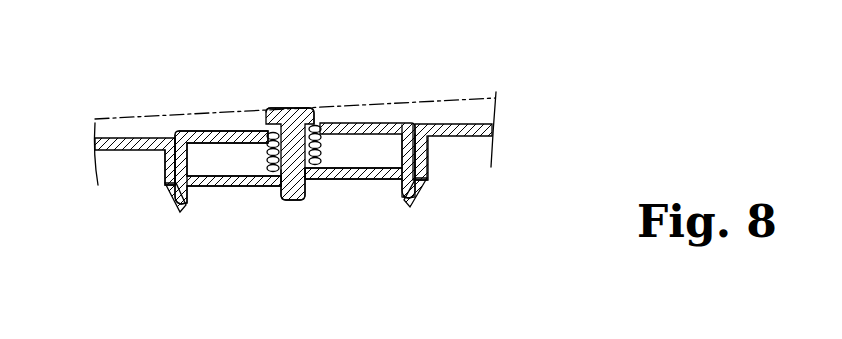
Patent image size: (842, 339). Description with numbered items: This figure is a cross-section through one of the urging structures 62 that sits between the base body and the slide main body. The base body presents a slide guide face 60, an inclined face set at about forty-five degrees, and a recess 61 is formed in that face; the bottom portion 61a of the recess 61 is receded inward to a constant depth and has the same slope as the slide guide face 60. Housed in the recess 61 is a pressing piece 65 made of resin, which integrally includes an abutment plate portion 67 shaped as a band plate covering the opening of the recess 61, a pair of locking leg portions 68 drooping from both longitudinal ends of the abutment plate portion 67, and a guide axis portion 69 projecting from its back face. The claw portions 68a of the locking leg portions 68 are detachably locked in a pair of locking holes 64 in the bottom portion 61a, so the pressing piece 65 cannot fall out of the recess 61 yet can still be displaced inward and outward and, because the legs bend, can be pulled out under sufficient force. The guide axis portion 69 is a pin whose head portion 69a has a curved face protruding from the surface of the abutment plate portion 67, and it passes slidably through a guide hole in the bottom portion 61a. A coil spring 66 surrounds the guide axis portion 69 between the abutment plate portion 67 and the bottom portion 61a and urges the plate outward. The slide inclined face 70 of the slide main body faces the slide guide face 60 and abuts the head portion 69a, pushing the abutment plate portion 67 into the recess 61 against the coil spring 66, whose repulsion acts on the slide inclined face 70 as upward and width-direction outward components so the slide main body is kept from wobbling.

The slide guide face 60 is at (120, 140).
The recess 61 is at (292, 170).
The bottom portion 61a is at (243, 187).
The urging structure 62 is at (287, 106).
The locking hole 64 is at (187, 188).
The pressing piece 65 is at (222, 124).
The coil spring 66 is at (338, 181).
The abutment plate portion 67 is at (375, 122).
The locking leg portion 68 is at (163, 157).
The claw portion 68a is at (178, 195).
The guide axis portion 69 is at (300, 203).
The head portion 69a is at (295, 107).
The slide inclined face 70 is at (436, 113).